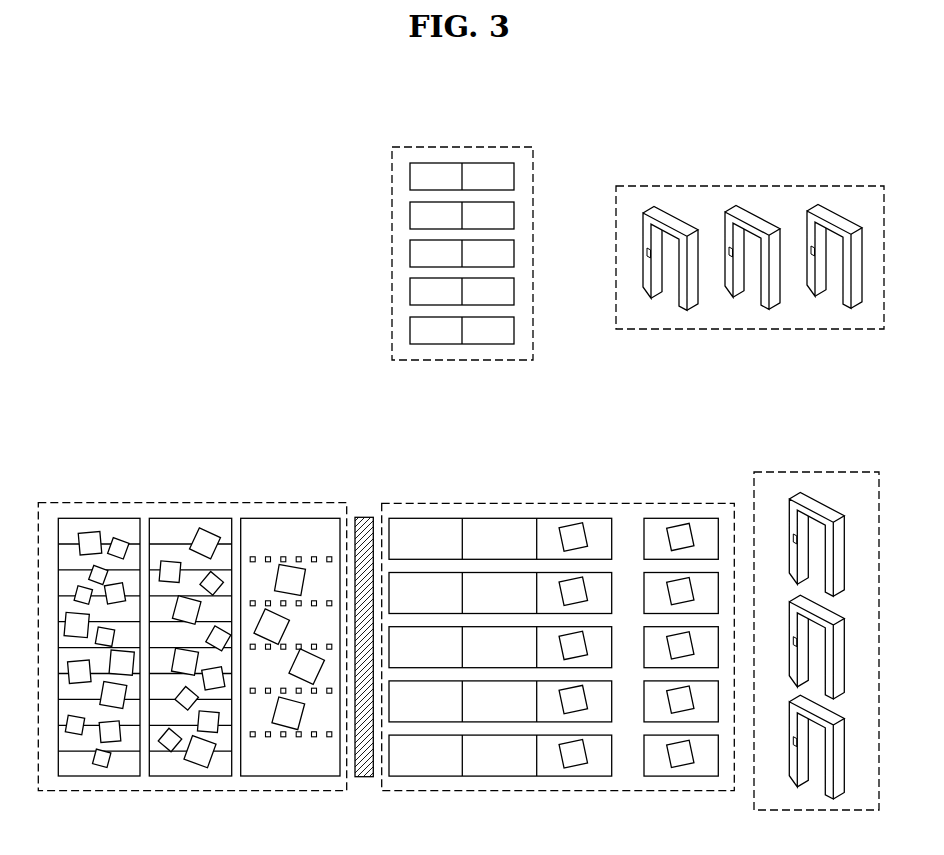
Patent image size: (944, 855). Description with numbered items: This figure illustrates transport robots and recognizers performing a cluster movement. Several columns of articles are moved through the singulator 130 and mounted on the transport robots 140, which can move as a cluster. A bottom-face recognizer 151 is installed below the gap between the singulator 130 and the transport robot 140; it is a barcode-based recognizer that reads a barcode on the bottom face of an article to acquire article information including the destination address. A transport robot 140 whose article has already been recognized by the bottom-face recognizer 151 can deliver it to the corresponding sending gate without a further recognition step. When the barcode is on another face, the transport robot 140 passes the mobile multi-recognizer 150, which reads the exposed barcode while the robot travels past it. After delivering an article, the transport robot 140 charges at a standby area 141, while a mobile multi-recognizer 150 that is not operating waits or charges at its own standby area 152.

The singulator 130 is at (193, 502).
The transport robot 140 is at (558, 503).
The standby area 141 is at (462, 146).
The mobile multi-recognizer 150 is at (818, 471).
The bottom-face recognizer 151 is at (365, 517).
The standby area 152 is at (749, 186).